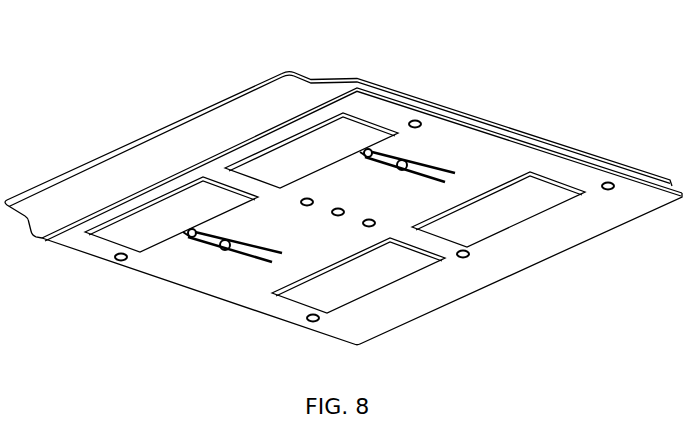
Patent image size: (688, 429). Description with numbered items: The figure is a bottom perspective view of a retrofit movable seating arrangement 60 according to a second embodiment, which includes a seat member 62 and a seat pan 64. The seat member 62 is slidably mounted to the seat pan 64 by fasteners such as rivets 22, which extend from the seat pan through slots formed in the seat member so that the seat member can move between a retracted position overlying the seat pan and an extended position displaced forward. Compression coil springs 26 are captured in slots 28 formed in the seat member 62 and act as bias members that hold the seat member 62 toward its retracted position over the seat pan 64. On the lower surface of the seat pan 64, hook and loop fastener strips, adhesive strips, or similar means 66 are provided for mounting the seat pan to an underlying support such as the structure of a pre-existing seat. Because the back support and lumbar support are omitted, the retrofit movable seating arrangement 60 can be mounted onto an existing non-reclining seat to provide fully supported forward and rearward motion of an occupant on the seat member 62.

The retrofit movable seating arrangement 60 is at (171, 73).
The seat member 62 is at (310, 73).
The seat pan 64 is at (383, 104).
The hook and loop fastener strips, adhesive strips, or similar means 66 is at (254, 163).
The rivets 22 is at (128, 258).
The compression coil springs 26 is at (438, 171).
The slots 28 is at (392, 157).